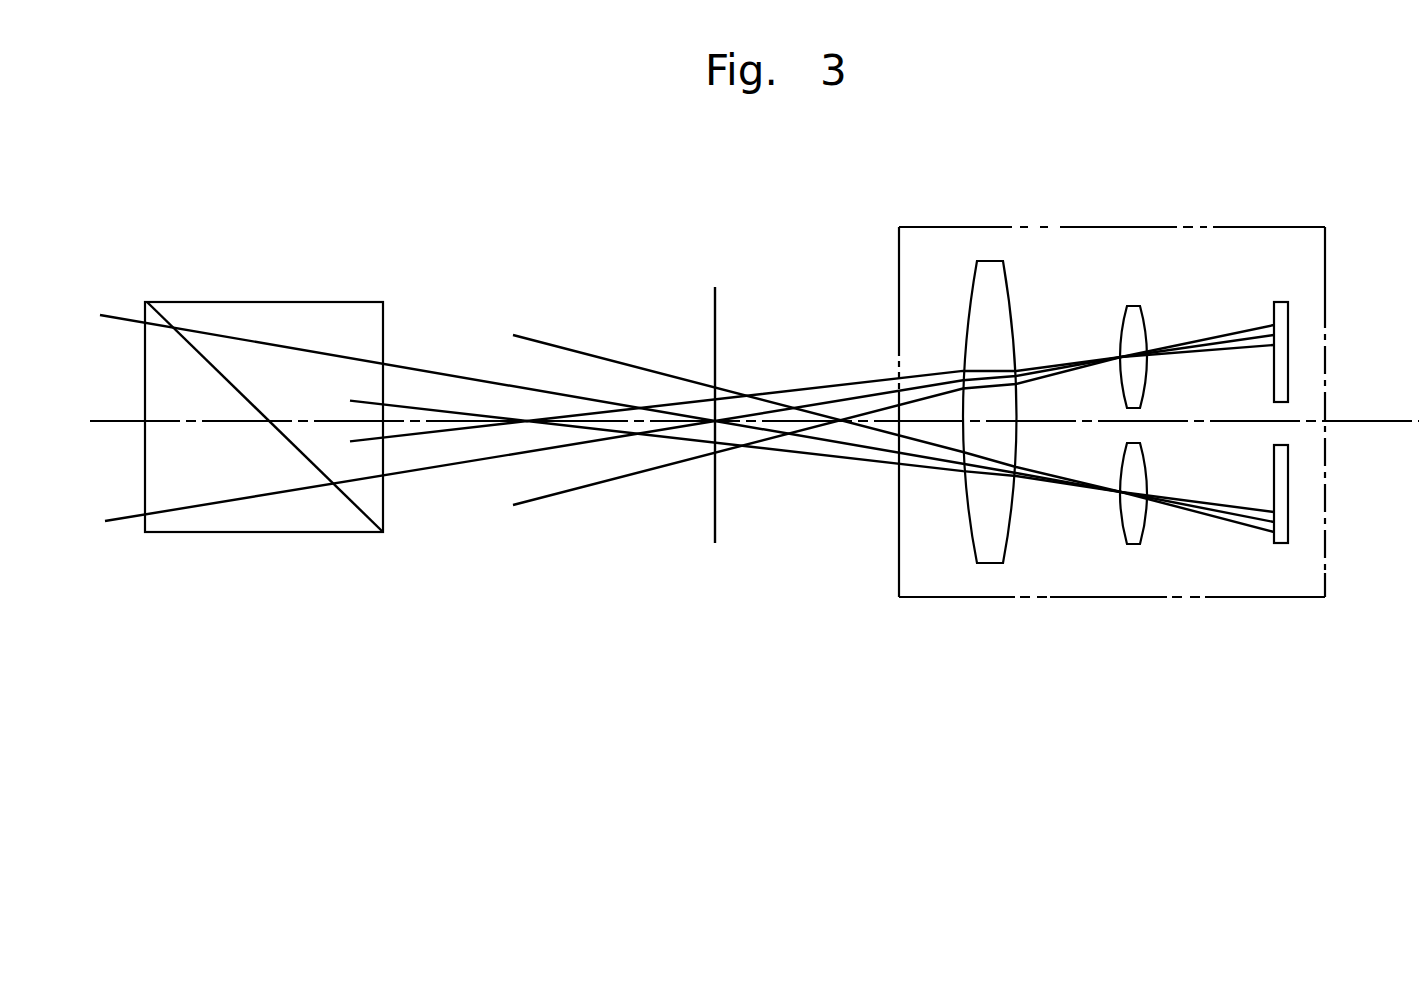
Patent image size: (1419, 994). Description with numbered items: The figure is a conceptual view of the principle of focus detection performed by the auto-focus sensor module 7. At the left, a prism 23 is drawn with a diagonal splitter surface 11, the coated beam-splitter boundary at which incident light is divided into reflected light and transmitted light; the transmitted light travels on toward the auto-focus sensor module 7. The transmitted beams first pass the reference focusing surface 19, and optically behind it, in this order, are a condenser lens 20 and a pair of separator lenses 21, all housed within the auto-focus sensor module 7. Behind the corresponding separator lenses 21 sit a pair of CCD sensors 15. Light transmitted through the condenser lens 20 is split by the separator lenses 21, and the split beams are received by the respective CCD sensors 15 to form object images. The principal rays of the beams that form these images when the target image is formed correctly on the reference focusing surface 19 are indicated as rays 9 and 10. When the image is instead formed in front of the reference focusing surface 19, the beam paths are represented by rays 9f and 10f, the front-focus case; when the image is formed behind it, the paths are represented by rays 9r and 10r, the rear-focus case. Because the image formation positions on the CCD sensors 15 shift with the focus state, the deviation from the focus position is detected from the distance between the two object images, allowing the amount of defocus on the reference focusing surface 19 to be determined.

The auto-focus sensor module 7 is at (1058, 597).
The principal ray 9 is at (437, 372).
The ray 9f is at (1223, 505).
The ray 9r is at (1252, 528).
The principal ray 10 is at (463, 465).
The ray 10f is at (1222, 338).
The ray 10r is at (1248, 323).
The splitter surface 11 is at (350, 507).
The CCD sensors 15 is at (1283, 302).
The reference focusing surface 19 is at (717, 510).
The condenser lens 20 is at (985, 543).
The separator lenses 21 is at (1132, 320).
The prism 23 is at (287, 320).